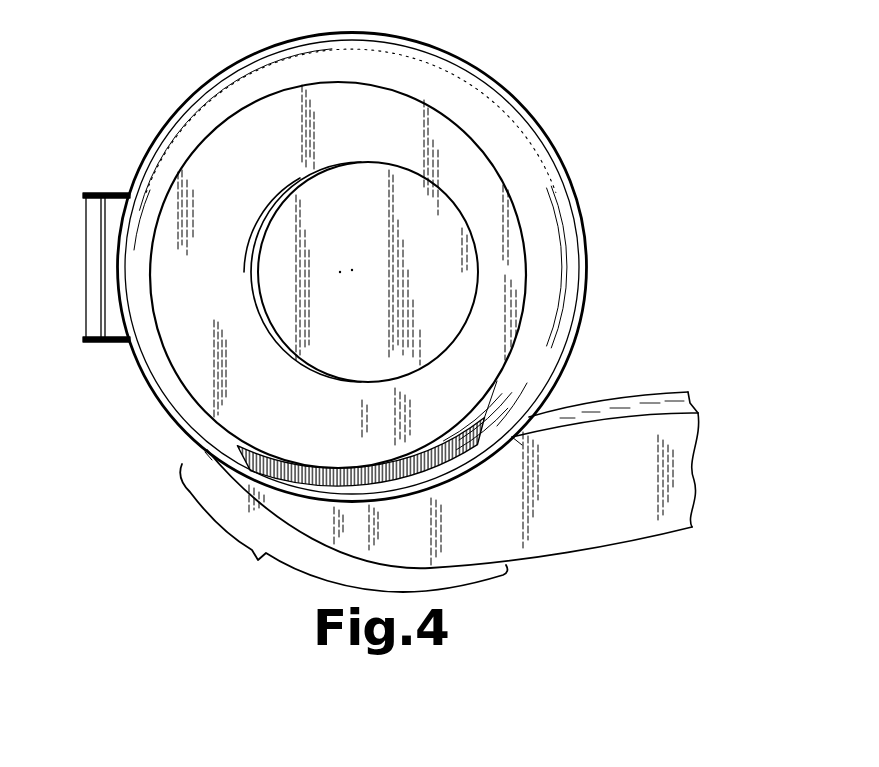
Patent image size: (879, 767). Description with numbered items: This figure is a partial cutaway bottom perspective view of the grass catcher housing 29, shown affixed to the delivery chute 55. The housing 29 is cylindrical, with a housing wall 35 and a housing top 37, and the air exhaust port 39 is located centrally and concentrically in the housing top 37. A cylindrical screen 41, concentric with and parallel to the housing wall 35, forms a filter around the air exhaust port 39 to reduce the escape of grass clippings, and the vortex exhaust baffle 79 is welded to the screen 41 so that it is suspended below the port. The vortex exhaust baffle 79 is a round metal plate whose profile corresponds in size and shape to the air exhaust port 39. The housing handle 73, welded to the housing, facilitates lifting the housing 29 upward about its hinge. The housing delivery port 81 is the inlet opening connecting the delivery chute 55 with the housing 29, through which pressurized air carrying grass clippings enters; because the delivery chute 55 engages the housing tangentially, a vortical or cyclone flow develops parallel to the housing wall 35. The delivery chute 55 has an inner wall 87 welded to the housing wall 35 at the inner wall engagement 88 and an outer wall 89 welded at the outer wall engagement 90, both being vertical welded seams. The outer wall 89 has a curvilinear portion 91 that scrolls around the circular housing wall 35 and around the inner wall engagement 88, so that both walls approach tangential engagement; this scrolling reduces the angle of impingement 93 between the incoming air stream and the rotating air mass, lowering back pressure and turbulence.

The housing 29 is at (606, 273).
The housing wall 35 is at (171, 128).
The housing top 37 is at (384, 144).
The air exhaust port 39 is at (256, 238).
The screen 41 is at (233, 281).
The vortex exhaust baffle 79 is at (384, 283).
The housing delivery port 81 is at (346, 464).
The housing handle 73 is at (85, 195).
The angle of impingement 93 is at (596, 415).
The inner wall 87 is at (648, 402).
The delivery chute 55 is at (618, 476).
The outer wall 89 is at (633, 534).
The inner wall engagement 88 is at (513, 452).
The outer wall engagement 90 is at (217, 463).
The curvilinear portion 91 is at (343, 528).